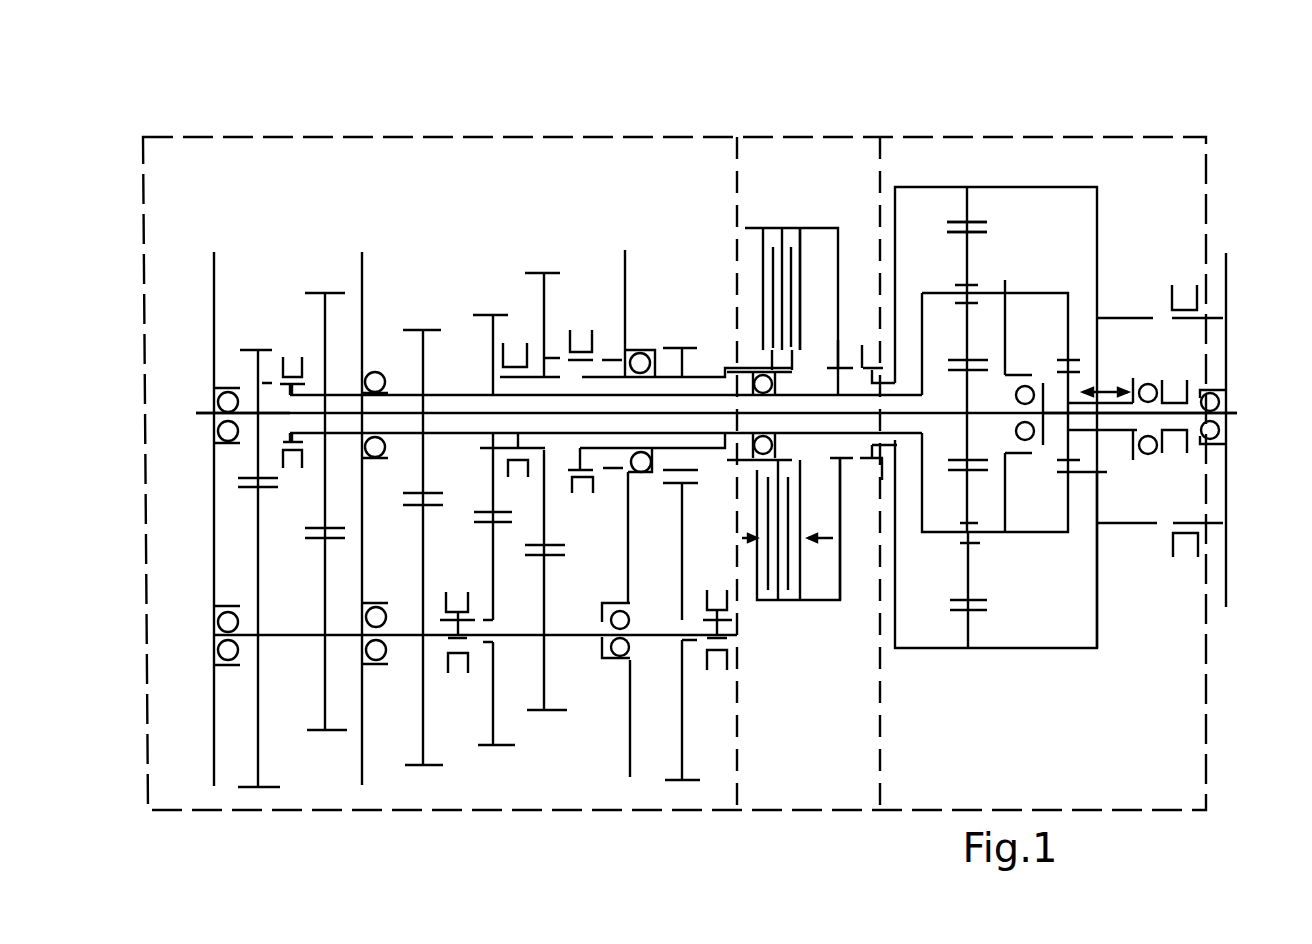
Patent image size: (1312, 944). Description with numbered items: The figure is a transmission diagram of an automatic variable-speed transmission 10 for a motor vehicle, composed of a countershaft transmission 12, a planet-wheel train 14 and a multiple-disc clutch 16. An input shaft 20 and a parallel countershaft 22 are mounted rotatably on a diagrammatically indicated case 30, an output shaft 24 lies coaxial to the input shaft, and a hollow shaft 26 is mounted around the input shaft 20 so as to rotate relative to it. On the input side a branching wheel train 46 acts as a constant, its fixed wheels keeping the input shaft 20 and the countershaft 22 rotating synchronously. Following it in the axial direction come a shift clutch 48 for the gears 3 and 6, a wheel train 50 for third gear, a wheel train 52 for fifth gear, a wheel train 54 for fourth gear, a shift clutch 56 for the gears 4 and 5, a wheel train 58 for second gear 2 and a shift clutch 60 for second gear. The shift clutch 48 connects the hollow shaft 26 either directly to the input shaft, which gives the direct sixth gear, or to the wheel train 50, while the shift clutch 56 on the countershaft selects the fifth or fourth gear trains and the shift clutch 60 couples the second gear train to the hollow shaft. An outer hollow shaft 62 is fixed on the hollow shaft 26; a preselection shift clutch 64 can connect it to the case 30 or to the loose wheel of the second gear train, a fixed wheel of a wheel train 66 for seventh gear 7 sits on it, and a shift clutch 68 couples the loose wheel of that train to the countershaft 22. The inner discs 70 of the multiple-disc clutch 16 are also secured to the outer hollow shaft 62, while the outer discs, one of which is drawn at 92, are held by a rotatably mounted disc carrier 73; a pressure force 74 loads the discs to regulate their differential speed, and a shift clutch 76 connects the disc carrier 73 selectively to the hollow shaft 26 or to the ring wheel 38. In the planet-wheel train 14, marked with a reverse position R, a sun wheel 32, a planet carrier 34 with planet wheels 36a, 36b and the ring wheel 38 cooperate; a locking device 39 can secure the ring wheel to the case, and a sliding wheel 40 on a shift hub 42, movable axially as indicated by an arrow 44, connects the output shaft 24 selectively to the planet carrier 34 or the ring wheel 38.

The automatic variable-speed transmission 10 is at (1193, 118).
The countershaft transmission 12 is at (408, 176).
The planet-wheel train 14 is at (1044, 170).
The multiple-disc clutch 16 is at (759, 171).
The input shaft 20 is at (247, 413).
The countershaft 22 is at (515, 637).
The output shaft 24 is at (1195, 412).
The hollow shaft 26 is at (457, 395).
The case 30 is at (212, 278).
The sun wheel 32 is at (970, 445).
The planet carrier 34 is at (925, 535).
The planet wheel 36a is at (968, 258).
The planet wheel 36b is at (976, 572).
The ring wheel 38 is at (1074, 650).
The locking device 39 is at (1187, 285).
The sliding wheel 40 is at (1098, 528).
The shift hub 42 is at (1125, 432).
The arrow 44 is at (1107, 392).
The branching wheel train 46 is at (243, 333).
The shift clutch 48 is at (292, 447).
The wheel train for third gear 50 is at (324, 262).
The wheel train for fifth gear 52 is at (418, 293).
The wheel train for fourth gear 54 is at (483, 305).
The shift clutch 56 is at (460, 677).
The wheel train for second gear 58 is at (546, 240).
The shift clutch 60 is at (517, 353).
The outer hollow shaft 62 is at (708, 375).
The preselection shift clutch 64 is at (580, 330).
The wheel train for seventh gear 66 is at (670, 333).
The shift clutch 68 is at (713, 655).
The inner discs 70 is at (770, 343).
The disc carrier 73 is at (810, 228).
The pressure force 74 is at (725, 540).
The shift clutch 76 is at (848, 472).
The clutch plate 92 is at (800, 297).
The reverse gear R is at (967, 226).
The second gear stage 2 is at (546, 480).
The gear 3 is at (326, 498).
The gear 4 is at (494, 518).
The gear 5 is at (423, 534).
The gear 6 is at (259, 555).
The seventh gear stage 7 is at (681, 551).